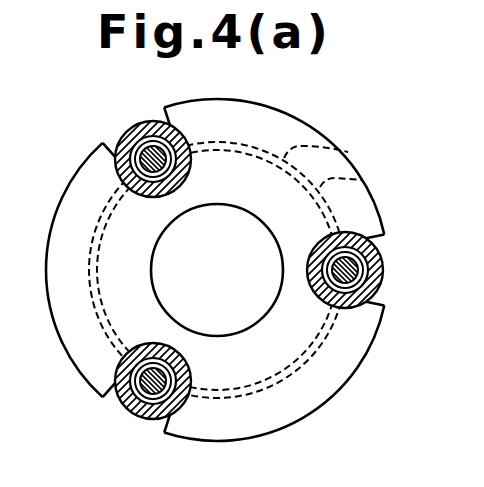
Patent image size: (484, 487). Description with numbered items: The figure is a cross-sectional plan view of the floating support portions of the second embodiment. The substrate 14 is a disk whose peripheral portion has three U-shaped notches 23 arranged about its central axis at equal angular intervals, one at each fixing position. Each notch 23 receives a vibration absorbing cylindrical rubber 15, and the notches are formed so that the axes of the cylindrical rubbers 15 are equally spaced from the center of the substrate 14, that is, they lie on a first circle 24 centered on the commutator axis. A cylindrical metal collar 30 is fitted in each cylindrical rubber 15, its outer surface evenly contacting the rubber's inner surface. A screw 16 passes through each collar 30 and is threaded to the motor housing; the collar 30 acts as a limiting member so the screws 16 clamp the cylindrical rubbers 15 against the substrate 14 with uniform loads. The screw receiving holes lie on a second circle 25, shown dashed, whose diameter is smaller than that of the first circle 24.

The substrate 14 is at (330, 386).
The vibration absorbing cylindrical rubber 15 is at (128, 143).
The screw 16 is at (158, 161).
The U-shaped notch 23 is at (165, 114).
The first circle 24 is at (367, 182).
The second circle 25 is at (349, 153).
The cylindrical metal collar 30 is at (173, 147).